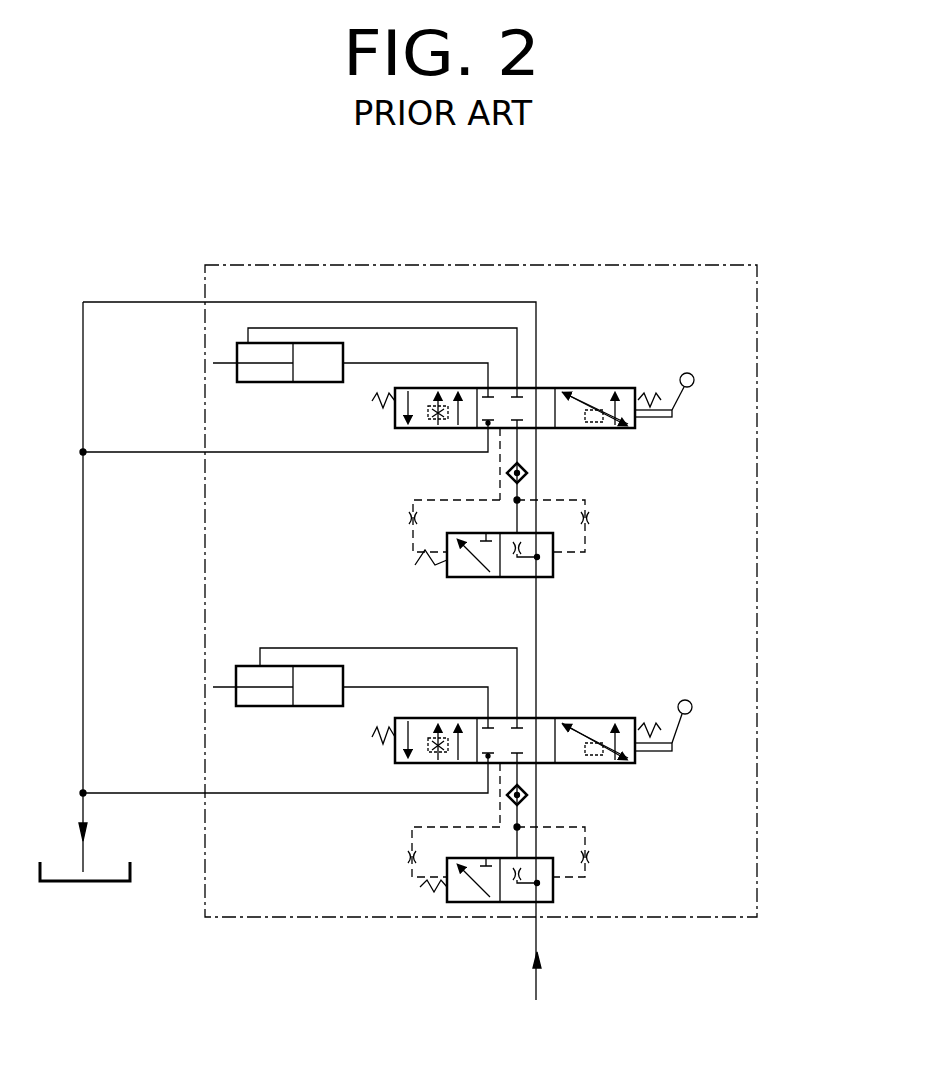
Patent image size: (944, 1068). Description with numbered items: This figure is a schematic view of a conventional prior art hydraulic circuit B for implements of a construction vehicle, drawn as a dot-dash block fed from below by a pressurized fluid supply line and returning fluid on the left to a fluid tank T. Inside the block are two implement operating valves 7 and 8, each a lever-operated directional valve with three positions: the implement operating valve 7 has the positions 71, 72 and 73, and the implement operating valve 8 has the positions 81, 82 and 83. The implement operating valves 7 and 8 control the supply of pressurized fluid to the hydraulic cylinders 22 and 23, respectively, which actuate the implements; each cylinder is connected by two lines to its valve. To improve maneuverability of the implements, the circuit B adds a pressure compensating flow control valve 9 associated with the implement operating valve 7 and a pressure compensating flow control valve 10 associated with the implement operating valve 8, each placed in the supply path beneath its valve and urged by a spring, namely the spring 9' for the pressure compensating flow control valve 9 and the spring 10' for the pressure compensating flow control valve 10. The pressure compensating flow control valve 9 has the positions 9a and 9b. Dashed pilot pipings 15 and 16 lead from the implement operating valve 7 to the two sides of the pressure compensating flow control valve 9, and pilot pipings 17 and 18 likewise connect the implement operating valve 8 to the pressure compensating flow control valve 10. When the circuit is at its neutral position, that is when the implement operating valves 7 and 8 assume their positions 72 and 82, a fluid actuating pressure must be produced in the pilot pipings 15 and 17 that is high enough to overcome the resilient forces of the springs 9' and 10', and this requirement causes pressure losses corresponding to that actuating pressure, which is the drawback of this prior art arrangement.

The hydraulic circuit for implements B is at (760, 875).
The fluid tank T is at (90, 882).
The implement operating valve 7 is at (509, 735).
The position of implement operating valve 7 71 is at (612, 716).
The neutral position of implement operating valve 7 72 is at (547, 716).
The position of implement operating valve 7 73 is at (395, 757).
The implement operating valve 8 is at (510, 404).
The position of implement operating valve 8 81 is at (612, 386).
The neutral position of implement operating valve 8 82 is at (547, 386).
The position of implement operating valve 8 83 is at (395, 422).
The pressure compensating flow control valve 9 is at (478, 909).
The spring 9' is at (396, 888).
The position of pressure compensating flow control valve 9 9a is at (547, 904).
The position of pressure compensating flow control valve 9 9b is at (462, 904).
The pressure compensating flow control valve 10 is at (494, 571).
The spring 10' is at (408, 579).
The pilot piping 15 is at (585, 828).
The pilot piping 16 is at (412, 836).
The pilot piping 17 is at (585, 498).
The pilot piping 18 is at (413, 500).
The hydraulic cylinder 22 is at (260, 708).
The hydraulic cylinder 23 is at (250, 386).